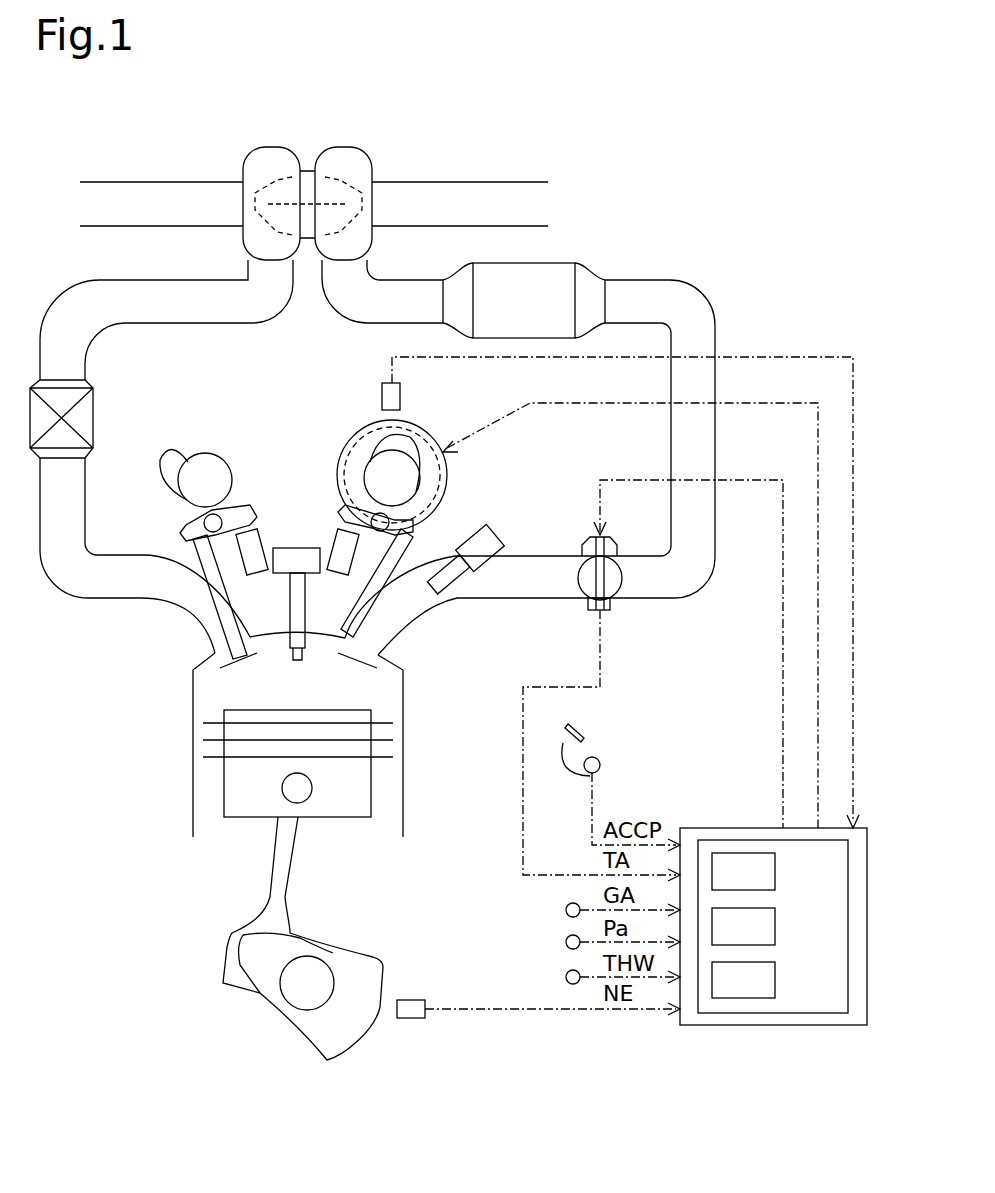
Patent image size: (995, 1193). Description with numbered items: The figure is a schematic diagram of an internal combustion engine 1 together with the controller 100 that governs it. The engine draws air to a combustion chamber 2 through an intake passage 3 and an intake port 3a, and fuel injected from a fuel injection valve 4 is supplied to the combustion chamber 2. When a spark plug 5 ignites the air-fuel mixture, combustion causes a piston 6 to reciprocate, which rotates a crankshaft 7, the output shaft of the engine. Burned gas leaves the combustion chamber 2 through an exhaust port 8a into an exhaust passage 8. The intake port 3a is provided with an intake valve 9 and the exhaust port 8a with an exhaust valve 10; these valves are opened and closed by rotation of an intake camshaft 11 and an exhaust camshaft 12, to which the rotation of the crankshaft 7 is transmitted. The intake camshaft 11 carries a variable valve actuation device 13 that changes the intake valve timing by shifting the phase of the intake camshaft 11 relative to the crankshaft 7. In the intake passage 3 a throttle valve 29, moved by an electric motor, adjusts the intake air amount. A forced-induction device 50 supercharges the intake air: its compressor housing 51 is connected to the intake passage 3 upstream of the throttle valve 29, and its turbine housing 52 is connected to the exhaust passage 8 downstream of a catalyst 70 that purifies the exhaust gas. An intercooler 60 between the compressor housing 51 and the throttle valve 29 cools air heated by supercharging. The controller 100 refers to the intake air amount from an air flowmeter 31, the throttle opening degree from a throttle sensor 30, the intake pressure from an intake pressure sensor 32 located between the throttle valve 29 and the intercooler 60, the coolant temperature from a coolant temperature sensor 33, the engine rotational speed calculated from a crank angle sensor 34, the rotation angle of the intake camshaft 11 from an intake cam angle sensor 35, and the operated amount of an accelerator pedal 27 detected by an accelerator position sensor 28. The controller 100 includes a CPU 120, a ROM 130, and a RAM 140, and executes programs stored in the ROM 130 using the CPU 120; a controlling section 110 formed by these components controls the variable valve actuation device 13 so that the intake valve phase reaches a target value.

The internal combustion engine 1 is at (245, 421).
The combustion chamber 2 is at (200, 678).
The intake passage 3 is at (468, 182).
The intake port 3a is at (343, 642).
The fuel injection valve 4 is at (490, 548).
The spark plug 5 is at (290, 608).
The piston 6 is at (346, 817).
The crankshaft 7 is at (345, 957).
The exhaust passage 8 is at (168, 182).
The exhaust port 8a is at (255, 642).
The intake valve 9 is at (362, 622).
The exhaust valve 10 is at (205, 628).
The intake camshaft 11 is at (382, 472).
The exhaust camshaft 12 is at (178, 492).
The variable valve actuation device 13 is at (447, 470).
The accelerator pedal 27 is at (568, 725).
The accelerator position sensor 28 is at (600, 762).
The throttle valve 29 is at (622, 577).
The throttle sensor 30 is at (610, 612).
The air flowmeter 31 is at (566, 910).
The intake pressure sensor 32 is at (566, 942).
The coolant temperature sensor 33 is at (566, 977).
The crank angle sensor 34 is at (412, 1000).
The intake cam angle sensor 35 is at (400, 396).
The forced-induction device 50 is at (307, 172).
The compressor housing 51 is at (345, 147).
The turbine housing 52 is at (272, 147).
The intercooler 60 is at (510, 263).
The catalyst 70 is at (93, 412).
The controller 100 is at (728, 828).
The controlling section 110 is at (783, 1013).
The CPU 120 is at (775, 872).
The ROM 130 is at (775, 927).
The RAM 140 is at (775, 980).